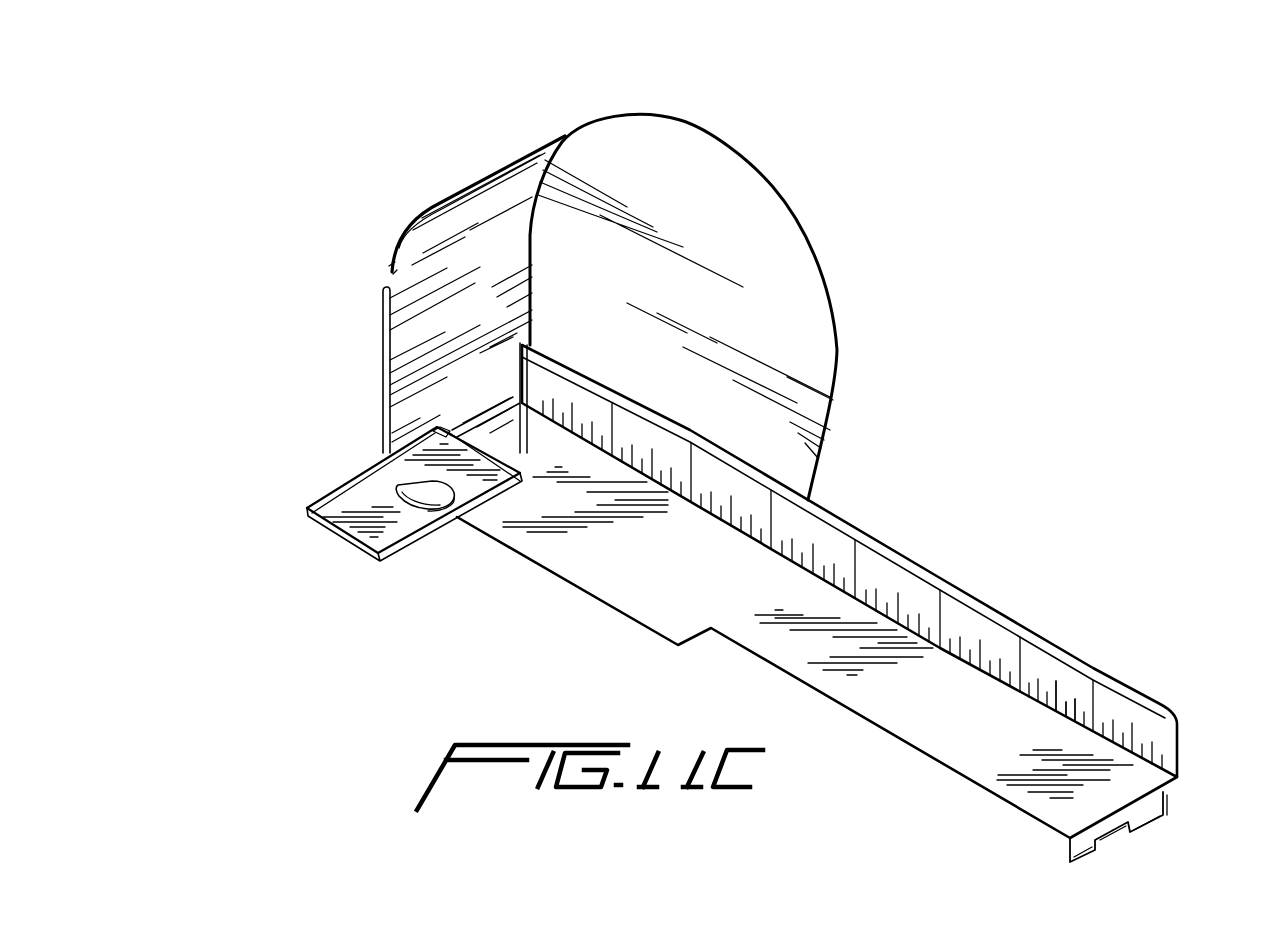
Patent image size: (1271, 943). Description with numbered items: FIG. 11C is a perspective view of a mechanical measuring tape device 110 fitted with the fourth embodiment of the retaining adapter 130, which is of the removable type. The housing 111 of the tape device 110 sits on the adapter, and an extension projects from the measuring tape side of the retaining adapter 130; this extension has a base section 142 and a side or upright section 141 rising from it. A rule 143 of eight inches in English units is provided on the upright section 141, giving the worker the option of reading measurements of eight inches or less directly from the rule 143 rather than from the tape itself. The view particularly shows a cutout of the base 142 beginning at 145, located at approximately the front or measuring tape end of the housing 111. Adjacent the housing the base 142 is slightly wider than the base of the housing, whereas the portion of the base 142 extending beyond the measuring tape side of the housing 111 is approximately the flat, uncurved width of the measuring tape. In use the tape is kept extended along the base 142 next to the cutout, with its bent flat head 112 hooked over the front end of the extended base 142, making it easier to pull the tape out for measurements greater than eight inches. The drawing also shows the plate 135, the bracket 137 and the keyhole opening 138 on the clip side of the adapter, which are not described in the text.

The tape device 110 is at (497, 165).
The housing 111 is at (792, 243).
The bent flat head 112 is at (1162, 818).
The retaining adapter 130 is at (380, 352).
The mounting plate 135 is at (340, 526).
The bracket flange 137 is at (318, 494).
The keyhole opening 138 is at (430, 497).
The upright section 141 is at (913, 565).
The base section 142 is at (608, 588).
The rule 143 is at (1068, 670).
The cutout beginning 145 is at (700, 642).